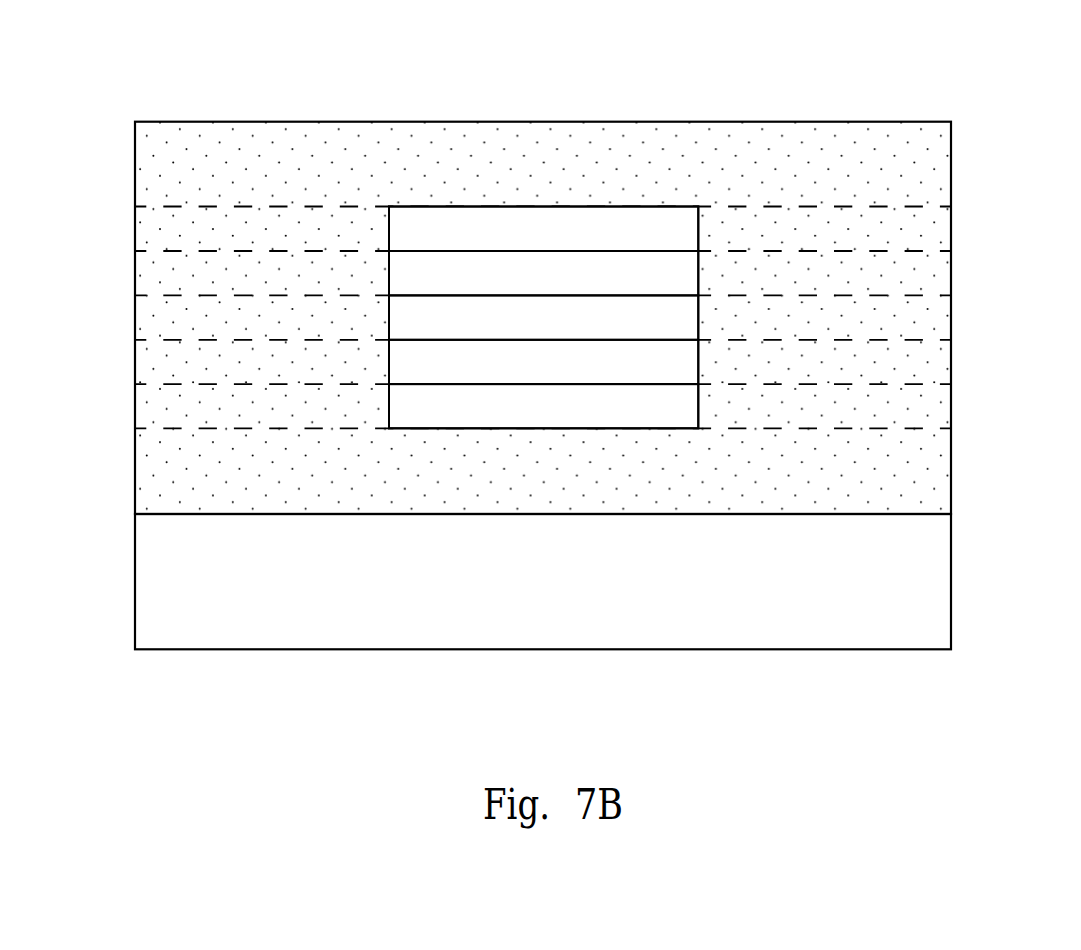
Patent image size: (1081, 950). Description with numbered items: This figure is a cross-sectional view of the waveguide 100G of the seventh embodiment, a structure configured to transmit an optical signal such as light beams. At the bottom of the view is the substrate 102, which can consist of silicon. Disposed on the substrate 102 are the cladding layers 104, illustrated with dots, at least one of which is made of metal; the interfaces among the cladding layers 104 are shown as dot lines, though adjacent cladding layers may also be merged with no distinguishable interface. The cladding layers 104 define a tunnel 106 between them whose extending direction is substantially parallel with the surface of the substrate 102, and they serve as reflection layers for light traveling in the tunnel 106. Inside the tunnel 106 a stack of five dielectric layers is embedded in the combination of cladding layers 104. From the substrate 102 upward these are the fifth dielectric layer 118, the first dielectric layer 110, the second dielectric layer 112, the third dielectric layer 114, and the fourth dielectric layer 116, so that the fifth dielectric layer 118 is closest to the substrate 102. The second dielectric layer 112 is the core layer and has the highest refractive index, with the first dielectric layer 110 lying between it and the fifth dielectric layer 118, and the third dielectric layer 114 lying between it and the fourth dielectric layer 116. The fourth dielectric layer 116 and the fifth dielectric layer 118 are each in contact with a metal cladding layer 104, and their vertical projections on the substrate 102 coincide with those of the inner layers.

The waveguide 100G is at (92, 54).
The substrate 102 is at (942, 581).
The cladding layers 104 is at (942, 163).
The tunnel 106 is at (723, 238).
The first dielectric layer 110 is at (698, 361).
The second dielectric layer 112 is at (698, 316).
The third dielectric layer 114 is at (698, 273).
The fourth dielectric layer 116 is at (698, 229).
The fifth dielectric layer 118 is at (698, 405).